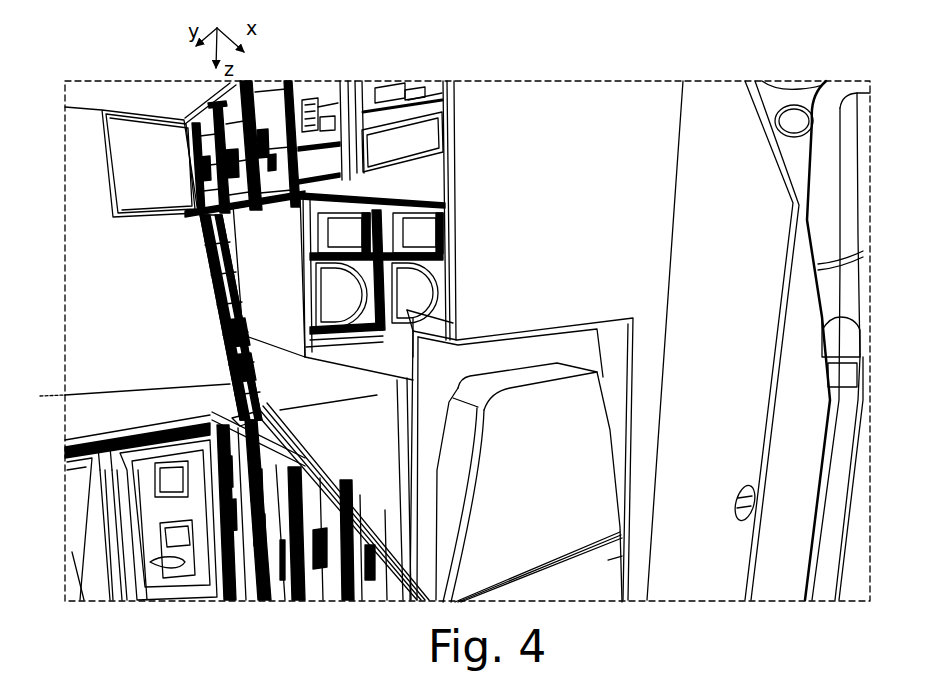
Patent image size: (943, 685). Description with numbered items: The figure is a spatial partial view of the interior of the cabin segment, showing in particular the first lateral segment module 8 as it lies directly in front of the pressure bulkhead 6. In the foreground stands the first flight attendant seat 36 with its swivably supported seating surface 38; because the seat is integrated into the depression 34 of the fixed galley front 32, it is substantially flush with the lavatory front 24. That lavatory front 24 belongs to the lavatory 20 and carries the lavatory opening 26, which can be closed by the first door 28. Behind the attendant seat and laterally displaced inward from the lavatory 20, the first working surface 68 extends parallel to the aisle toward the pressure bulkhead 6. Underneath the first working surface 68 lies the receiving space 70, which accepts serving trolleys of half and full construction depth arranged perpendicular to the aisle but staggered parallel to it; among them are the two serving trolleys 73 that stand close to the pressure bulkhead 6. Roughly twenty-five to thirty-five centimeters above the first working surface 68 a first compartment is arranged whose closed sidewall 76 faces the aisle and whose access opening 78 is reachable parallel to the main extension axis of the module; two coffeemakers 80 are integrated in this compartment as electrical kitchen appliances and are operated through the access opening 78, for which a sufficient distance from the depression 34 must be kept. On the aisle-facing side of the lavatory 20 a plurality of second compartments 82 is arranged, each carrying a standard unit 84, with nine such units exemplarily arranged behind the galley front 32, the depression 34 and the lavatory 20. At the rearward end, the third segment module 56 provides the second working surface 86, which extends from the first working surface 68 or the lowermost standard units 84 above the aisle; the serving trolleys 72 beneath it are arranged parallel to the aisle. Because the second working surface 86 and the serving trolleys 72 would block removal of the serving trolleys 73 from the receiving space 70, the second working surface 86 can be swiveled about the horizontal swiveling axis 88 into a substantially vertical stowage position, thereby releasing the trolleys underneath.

The pressure bulkhead 6 is at (142, 275).
The first lateral segment module 8 is at (619, 77).
The lavatory 20 is at (805, 99).
The lavatory front 24 is at (812, 484).
The lavatory opening 26 is at (782, 244).
The first door 28 is at (738, 343).
The galley front 32 is at (563, 187).
The depression 34 is at (606, 331).
The first flight attendant seat 36 is at (567, 547).
The seating surface 38 is at (612, 572).
The third segment module 56 is at (82, 272).
The first working surface 68 is at (397, 431).
The receiving space 70 is at (348, 336).
The serving trolleys 72 is at (96, 549).
The serving trolleys 73 is at (224, 428).
The closed sidewall 76 is at (283, 260).
The access opening 78 is at (318, 201).
The coffeemakers 80 is at (334, 287).
The second compartments 82 is at (200, 335).
The standard unit 84 is at (207, 371).
The second working surface 86 is at (86, 407).
The horizontal swiveling axis 88 is at (58, 396).